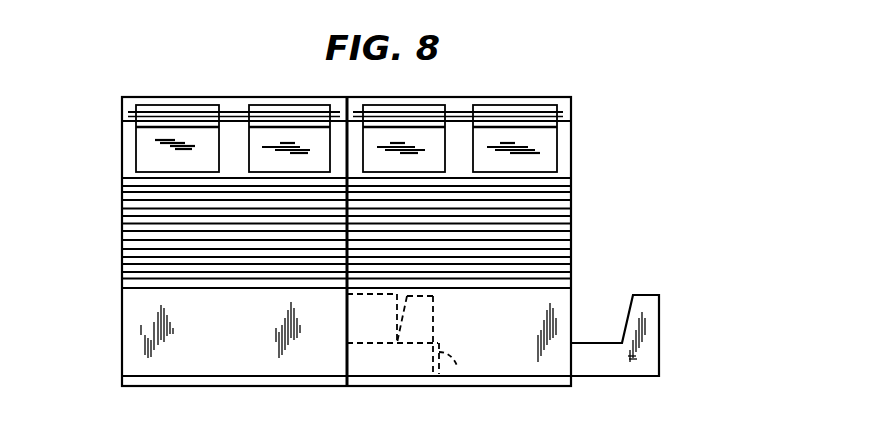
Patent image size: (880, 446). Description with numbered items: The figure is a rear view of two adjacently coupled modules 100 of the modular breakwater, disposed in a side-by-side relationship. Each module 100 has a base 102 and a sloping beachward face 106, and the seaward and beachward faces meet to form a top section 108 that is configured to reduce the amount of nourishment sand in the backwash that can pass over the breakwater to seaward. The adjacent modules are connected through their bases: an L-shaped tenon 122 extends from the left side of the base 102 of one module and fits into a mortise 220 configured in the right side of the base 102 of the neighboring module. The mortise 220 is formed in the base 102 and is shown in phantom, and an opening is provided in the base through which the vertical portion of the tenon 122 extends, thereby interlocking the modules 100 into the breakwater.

The module 100 is at (202, 80).
The base 102 is at (214, 398).
The beachward face 106 is at (122, 337).
The top section 108 is at (122, 162).
The tenon 122 is at (425, 317).
The mortise 220 is at (458, 368).